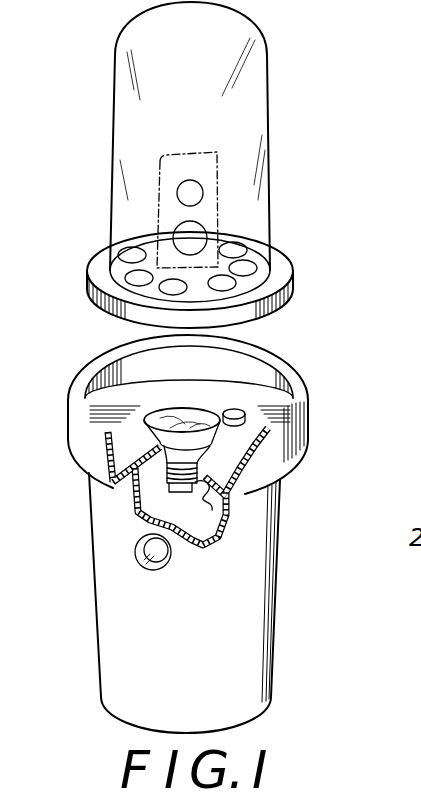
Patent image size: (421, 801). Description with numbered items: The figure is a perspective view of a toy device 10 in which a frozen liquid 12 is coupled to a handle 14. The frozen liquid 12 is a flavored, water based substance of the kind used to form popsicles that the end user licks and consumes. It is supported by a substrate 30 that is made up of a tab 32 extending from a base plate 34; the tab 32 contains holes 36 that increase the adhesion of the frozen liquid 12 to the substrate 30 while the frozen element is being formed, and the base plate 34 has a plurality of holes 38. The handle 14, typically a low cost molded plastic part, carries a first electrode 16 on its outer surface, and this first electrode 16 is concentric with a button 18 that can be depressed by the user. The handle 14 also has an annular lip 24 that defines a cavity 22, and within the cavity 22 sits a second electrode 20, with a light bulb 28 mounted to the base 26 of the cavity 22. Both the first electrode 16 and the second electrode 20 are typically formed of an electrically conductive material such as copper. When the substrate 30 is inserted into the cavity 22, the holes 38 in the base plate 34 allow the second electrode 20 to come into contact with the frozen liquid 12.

The toy device 10 is at (24, 223).
The frozen liquid 12 is at (146, 73).
The handle 14 is at (110, 636).
The first electrode 16 is at (143, 535).
The button 18 is at (150, 567).
The second electrode 20 is at (244, 413).
The cavity 22 is at (118, 403).
The annular lip 24 is at (124, 348).
The base 26 is at (207, 392).
The light bulb 28 is at (210, 419).
The substrate 30 is at (306, 267).
The tab 32 is at (205, 165).
The base plate 34 is at (100, 251).
The holes 36 is at (196, 191).
The holes 38 is at (245, 268).